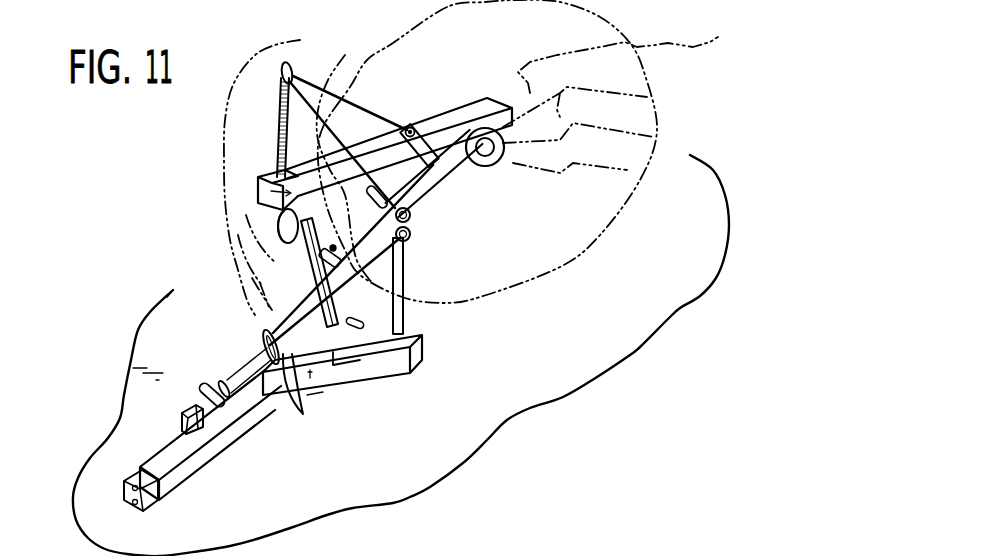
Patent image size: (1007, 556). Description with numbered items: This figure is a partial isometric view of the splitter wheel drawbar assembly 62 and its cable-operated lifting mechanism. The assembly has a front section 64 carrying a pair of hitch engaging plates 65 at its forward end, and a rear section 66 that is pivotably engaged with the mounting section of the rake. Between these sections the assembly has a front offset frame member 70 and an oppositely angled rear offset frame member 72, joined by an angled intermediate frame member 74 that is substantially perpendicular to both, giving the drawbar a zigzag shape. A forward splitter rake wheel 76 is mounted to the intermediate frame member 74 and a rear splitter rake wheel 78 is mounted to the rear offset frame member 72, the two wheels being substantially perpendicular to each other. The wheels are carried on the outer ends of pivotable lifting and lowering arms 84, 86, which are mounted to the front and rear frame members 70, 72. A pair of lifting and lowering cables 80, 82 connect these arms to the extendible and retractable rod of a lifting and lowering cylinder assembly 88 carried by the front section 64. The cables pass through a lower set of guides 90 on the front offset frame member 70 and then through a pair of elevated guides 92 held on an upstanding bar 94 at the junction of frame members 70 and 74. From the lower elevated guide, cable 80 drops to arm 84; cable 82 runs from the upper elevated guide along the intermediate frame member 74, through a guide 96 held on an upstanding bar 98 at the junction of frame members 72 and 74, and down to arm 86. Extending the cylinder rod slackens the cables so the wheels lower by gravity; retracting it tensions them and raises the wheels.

The splitter wheel drawbar assembly 62 is at (165, 270).
The front section 64 is at (203, 462).
The hitch engaging plates 65 is at (140, 503).
The rear section 66 is at (477, 104).
The front offset frame member 70 is at (377, 383).
The rear offset frame member 72 is at (395, 157).
The angled intermediate frame member 74 is at (271, 177).
The forward splitter rake wheel 76 is at (222, 138).
The rear splitter rake wheel 78 is at (458, 155).
The lifting and lowering cable 80 is at (333, 365).
The lifting and lowering cable 82 is at (323, 88).
The lifting and lowering arm 84 is at (280, 265).
The lifting and lowering arm 86 is at (466, 168).
The lifting and lowering cylinder assembly 88 is at (190, 395).
The lower set of guides 90 is at (288, 390).
The elevated guides 92 is at (415, 238).
The upstanding bar 94 is at (404, 303).
The guide 96 is at (278, 66).
The upstanding bar 98 is at (262, 86).